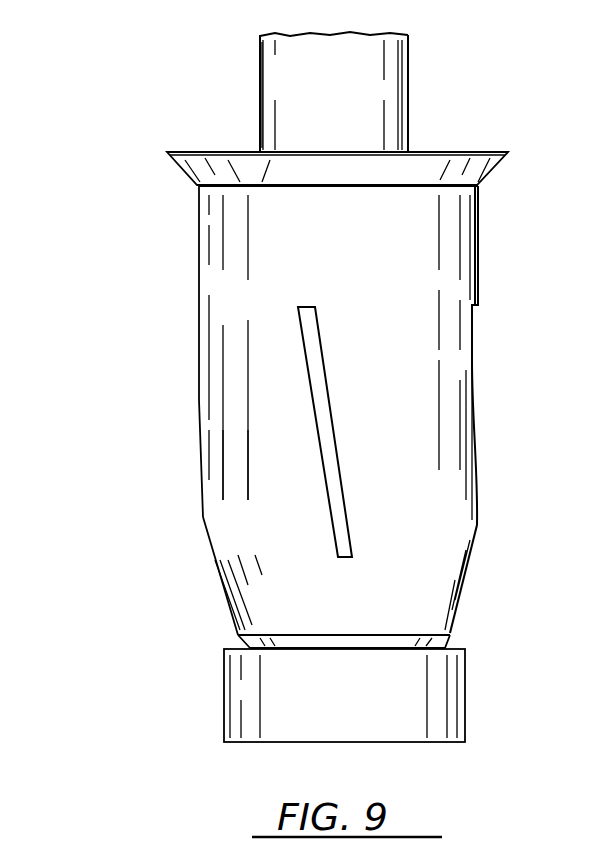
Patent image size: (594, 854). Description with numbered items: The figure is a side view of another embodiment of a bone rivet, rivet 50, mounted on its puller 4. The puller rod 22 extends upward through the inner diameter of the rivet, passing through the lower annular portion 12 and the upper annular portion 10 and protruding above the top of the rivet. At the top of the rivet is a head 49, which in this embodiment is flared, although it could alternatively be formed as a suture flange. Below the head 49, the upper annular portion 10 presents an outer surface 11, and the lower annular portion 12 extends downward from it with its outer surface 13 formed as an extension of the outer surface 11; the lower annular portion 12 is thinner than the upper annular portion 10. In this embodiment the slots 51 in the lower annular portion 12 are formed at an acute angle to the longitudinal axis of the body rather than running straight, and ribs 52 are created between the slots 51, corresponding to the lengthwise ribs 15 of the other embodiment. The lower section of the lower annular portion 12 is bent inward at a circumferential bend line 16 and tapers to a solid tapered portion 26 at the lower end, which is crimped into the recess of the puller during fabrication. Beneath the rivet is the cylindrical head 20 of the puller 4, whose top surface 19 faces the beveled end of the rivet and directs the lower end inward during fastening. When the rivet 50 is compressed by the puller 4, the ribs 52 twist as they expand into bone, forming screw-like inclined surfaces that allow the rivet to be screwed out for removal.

The puller 4 is at (250, 60).
The puller rod 22 is at (375, 87).
The head 49 is at (452, 152).
The upper annular portion 10 is at (188, 248).
The outer surface 11 is at (427, 224).
The lower annular portion 12 is at (228, 354).
The rivet 50 is at (492, 272).
The lengthwise ribs 15 is at (473, 362).
The slots 51 is at (320, 385).
The ribs 52 is at (282, 432).
The circumferential bend line 16 is at (203, 517).
The outer surface 13 is at (462, 588).
The solid tapered portion 26 is at (275, 600).
The top surface 19 is at (452, 641).
The head 20 is at (417, 699).